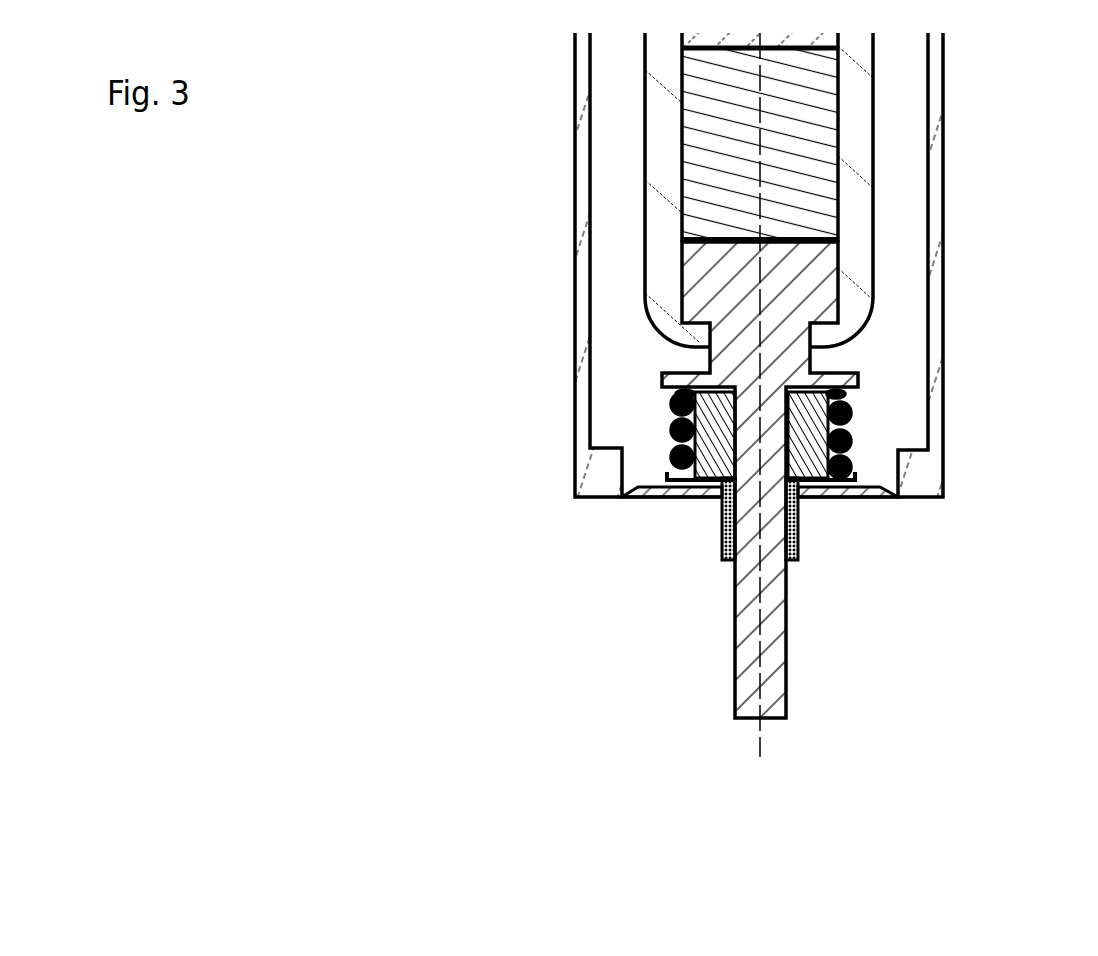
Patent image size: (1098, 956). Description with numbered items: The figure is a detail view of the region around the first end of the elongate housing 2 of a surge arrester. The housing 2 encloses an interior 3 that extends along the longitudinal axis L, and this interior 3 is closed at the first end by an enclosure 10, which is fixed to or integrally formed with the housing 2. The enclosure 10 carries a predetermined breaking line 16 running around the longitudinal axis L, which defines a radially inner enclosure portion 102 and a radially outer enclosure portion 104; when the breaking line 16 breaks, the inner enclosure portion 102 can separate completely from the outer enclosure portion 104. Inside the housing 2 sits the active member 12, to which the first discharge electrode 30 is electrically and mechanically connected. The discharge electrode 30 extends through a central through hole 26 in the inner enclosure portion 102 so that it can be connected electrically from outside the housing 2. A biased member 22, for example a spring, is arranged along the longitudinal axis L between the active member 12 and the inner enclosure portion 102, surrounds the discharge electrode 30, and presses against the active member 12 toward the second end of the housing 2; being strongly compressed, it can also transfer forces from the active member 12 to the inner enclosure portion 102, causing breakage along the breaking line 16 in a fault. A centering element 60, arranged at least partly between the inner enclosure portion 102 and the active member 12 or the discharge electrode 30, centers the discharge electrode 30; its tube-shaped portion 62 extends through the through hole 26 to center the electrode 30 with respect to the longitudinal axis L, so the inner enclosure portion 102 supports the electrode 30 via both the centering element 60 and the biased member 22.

The elongate housing 2 is at (944, 157).
The interior 3 is at (607, 74).
The active member 12 is at (703, 192).
The first discharge electrode 30 is at (790, 366).
The biased member 22 is at (672, 422).
The centering element 60 is at (808, 442).
The enclosure 10 is at (578, 550).
The radially outer enclosure portion 104 is at (612, 478).
The radially inner enclosure portion 102 is at (648, 498).
The predetermined breaking line 16 is at (897, 498).
The tube-shaped portion 62 is at (722, 533).
The central through hole 26 is at (802, 506).
The longitudinal axis L is at (760, 745).